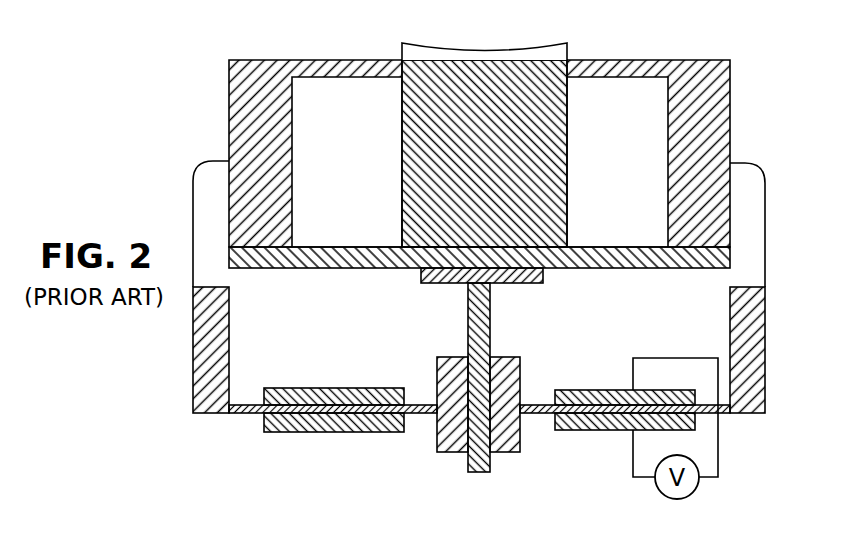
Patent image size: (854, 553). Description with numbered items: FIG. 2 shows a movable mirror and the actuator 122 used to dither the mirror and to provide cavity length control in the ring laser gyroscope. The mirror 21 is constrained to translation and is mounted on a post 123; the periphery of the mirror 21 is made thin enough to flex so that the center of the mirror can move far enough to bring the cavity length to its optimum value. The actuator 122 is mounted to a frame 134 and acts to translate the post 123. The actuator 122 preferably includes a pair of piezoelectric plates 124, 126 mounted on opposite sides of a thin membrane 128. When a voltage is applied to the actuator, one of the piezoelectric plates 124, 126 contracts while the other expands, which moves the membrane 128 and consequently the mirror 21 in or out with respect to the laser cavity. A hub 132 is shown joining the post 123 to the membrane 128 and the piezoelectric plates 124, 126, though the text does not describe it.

The mirror 21 is at (530, 45).
The actuator 122 is at (160, 146).
The post 123 is at (567, 212).
The piezoelectric plate 124 is at (608, 390).
The piezoelectric plate 126 is at (608, 430).
The membrane 128 is at (255, 414).
The hub 132 is at (437, 437).
The frame 134 is at (272, 60).